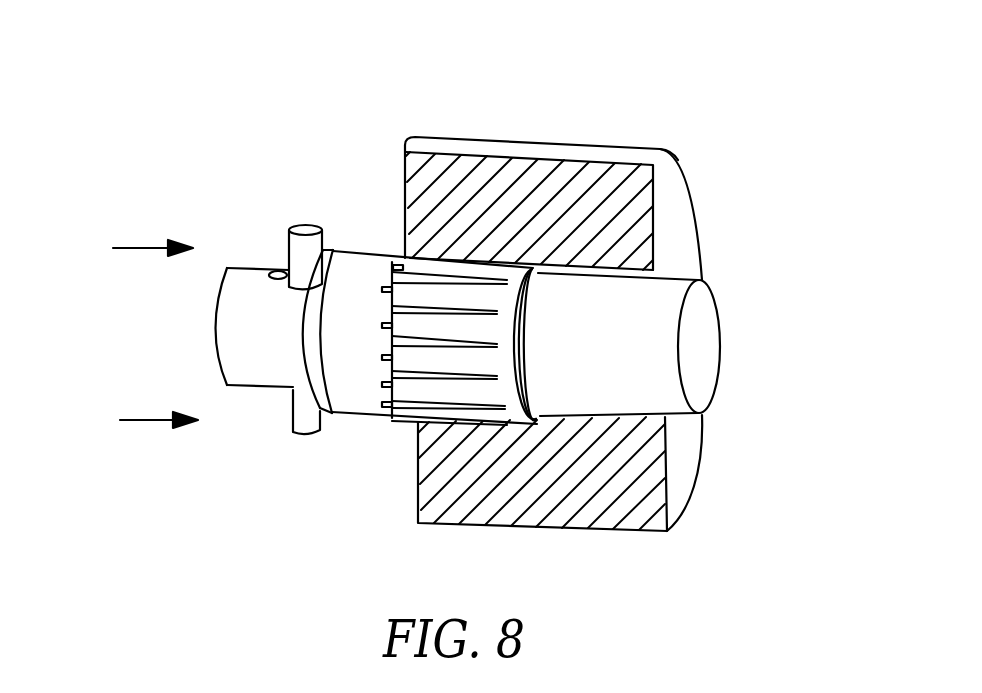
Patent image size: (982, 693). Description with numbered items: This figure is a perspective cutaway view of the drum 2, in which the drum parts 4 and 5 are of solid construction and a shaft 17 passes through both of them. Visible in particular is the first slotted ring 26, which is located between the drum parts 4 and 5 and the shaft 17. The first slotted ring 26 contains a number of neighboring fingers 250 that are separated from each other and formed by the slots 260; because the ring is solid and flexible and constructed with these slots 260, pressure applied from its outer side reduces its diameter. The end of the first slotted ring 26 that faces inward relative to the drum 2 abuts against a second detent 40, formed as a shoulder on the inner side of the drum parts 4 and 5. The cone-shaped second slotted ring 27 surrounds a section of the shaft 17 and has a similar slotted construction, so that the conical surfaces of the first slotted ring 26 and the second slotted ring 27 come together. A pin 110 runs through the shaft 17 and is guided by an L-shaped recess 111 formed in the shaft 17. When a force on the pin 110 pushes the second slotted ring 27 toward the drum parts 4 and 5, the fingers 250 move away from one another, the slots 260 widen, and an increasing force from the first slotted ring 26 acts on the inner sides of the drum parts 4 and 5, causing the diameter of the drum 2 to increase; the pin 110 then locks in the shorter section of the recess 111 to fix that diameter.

The drum 2 is at (302, 105).
The drum part 4 is at (685, 482).
The drum part 5 is at (678, 202).
The shaft 17 is at (235, 357).
The first slotted ring 26 is at (410, 258).
The second slotted ring 27 is at (348, 403).
The second detent 40 is at (530, 273).
The pin 110 is at (306, 227).
The recess 111 is at (283, 272).
The fingers 250 is at (508, 272).
The slots 260 is at (400, 282).